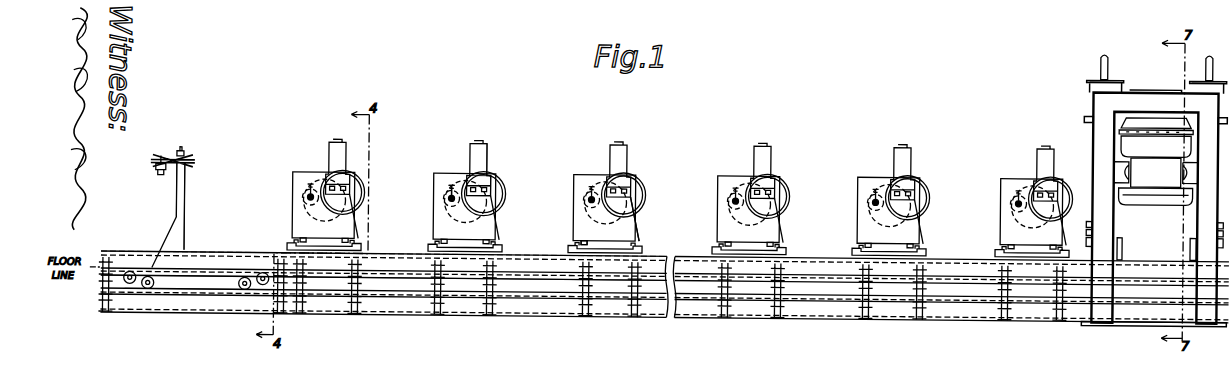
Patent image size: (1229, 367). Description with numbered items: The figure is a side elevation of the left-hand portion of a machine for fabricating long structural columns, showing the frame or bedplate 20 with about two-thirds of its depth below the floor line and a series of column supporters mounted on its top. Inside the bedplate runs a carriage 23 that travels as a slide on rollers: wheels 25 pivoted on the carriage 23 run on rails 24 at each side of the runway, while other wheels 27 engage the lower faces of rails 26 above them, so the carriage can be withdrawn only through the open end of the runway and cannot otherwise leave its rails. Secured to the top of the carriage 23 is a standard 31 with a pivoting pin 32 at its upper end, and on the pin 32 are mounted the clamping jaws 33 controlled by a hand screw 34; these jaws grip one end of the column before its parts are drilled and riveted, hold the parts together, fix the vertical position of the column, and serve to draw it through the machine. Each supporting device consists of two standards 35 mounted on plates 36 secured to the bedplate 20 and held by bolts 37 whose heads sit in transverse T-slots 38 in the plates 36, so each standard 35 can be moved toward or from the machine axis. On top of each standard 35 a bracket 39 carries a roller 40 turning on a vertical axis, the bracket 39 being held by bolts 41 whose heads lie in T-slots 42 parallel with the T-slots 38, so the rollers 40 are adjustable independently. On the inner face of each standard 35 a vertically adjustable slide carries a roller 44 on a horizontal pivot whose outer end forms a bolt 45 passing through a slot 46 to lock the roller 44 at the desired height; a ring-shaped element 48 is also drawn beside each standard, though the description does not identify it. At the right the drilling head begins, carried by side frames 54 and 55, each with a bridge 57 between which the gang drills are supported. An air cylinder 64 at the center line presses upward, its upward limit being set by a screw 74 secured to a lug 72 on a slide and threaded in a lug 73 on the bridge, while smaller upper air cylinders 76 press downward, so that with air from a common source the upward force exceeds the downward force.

The frame or bedplate 20 is at (535, 318).
The carriage 23 is at (212, 278).
The rails 24 is at (393, 278).
The wheels 25 is at (153, 288).
The rails 26 is at (376, 266).
The wheels 27 is at (132, 271).
The standard 31 is at (188, 198).
The pivoting pin 32 is at (185, 152).
The clamping jaws 33 is at (196, 160).
The hand screw 34 is at (161, 154).
The standards 35 is at (292, 217).
The plates 36 is at (490, 237).
The bolts 37 is at (443, 235).
The T-slots 38 is at (428, 249).
The bracket 39 is at (487, 145).
The roller 40 is at (468, 158).
The bolts 41 is at (485, 171).
The T-slots 42 is at (479, 192).
The roller 44 is at (445, 205).
The bolt 45 is at (306, 194).
The slot 46 is at (449, 185).
The hand wheel 48 is at (503, 184).
The side frame 54 is at (1092, 128).
The side frame 55 is at (1195, 219).
The bridge 57 is at (1125, 196).
The air cylinder 64 is at (1190, 243).
The lug 72 is at (1089, 212).
The lug 73 is at (1089, 222).
The screw 74 is at (1087, 232).
The air cylinders 76 is at (1087, 77).